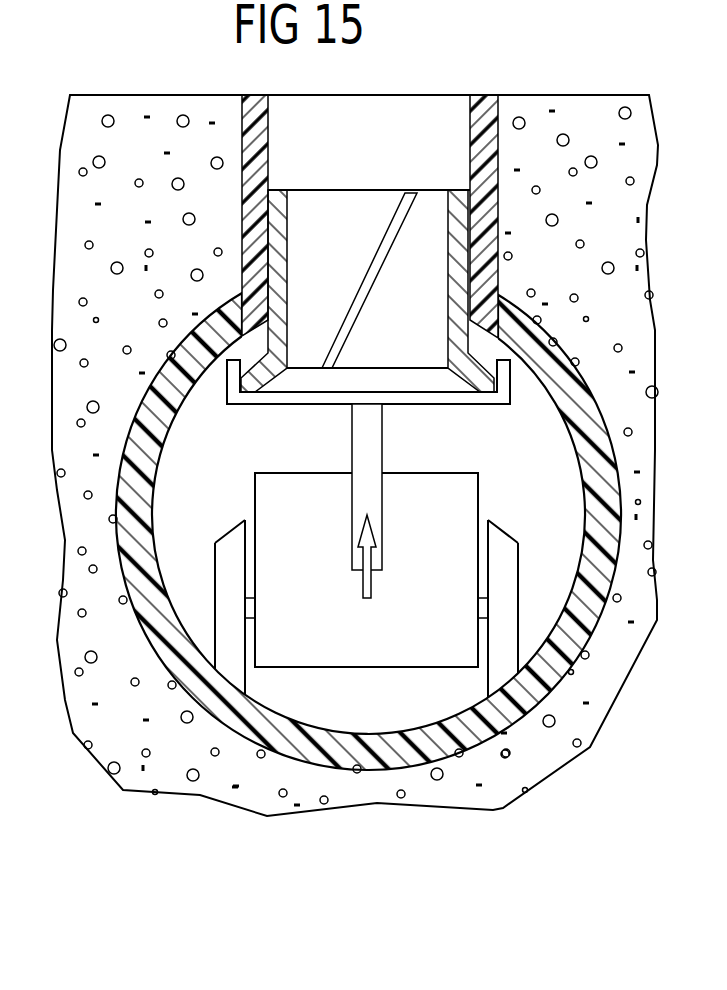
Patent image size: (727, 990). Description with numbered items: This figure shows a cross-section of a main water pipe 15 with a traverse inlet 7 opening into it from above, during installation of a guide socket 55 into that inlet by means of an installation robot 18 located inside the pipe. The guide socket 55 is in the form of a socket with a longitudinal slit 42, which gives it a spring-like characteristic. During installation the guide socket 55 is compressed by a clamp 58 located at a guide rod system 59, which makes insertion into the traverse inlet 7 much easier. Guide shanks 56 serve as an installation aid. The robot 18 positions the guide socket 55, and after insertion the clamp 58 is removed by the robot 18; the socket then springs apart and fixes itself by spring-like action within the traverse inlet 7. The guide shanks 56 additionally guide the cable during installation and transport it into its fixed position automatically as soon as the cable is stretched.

The traverse inlet 7 is at (426, 112).
The guide socket 55 is at (329, 207).
The longitudinal slit 42 is at (345, 318).
The guide shanks 56 is at (270, 370).
The clamp 58 is at (417, 398).
The guide rod system 59 is at (375, 495).
The main water pipe 15 is at (583, 548).
The installation robot 18 is at (355, 642).